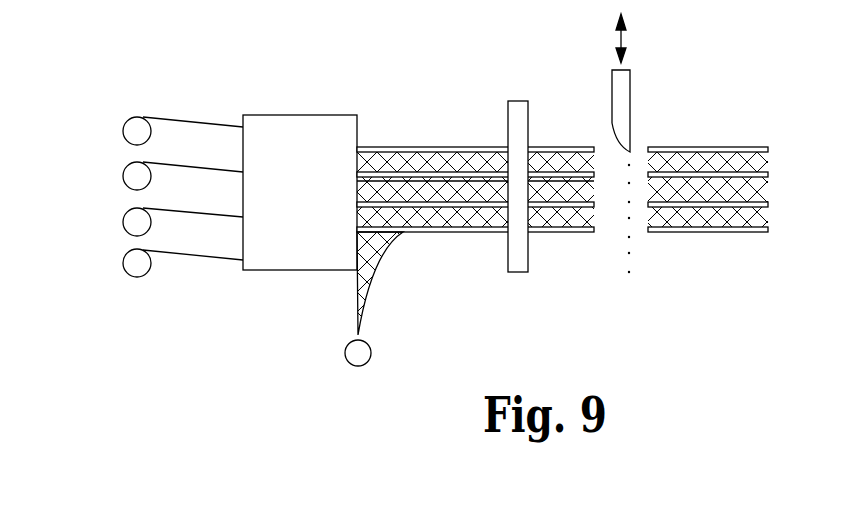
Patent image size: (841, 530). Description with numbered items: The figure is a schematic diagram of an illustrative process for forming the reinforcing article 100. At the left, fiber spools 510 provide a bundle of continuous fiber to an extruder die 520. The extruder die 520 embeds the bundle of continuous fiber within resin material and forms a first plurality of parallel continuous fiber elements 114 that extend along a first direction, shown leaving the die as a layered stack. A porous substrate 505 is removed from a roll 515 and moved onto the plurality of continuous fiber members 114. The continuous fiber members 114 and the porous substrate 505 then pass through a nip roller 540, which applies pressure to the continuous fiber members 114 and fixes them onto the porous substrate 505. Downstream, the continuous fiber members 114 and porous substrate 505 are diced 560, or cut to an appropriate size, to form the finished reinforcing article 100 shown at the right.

The reinforcing article 100 is at (718, 263).
The continuous fiber elements 114 is at (415, 147).
The substrate 505 is at (373, 275).
The fiber spools 510 is at (119, 312).
The waste take-up roll 515 is at (378, 372).
The extruder die 520 is at (312, 190).
The nip roller 540 is at (512, 282).
The dicing 560 is at (630, 98).